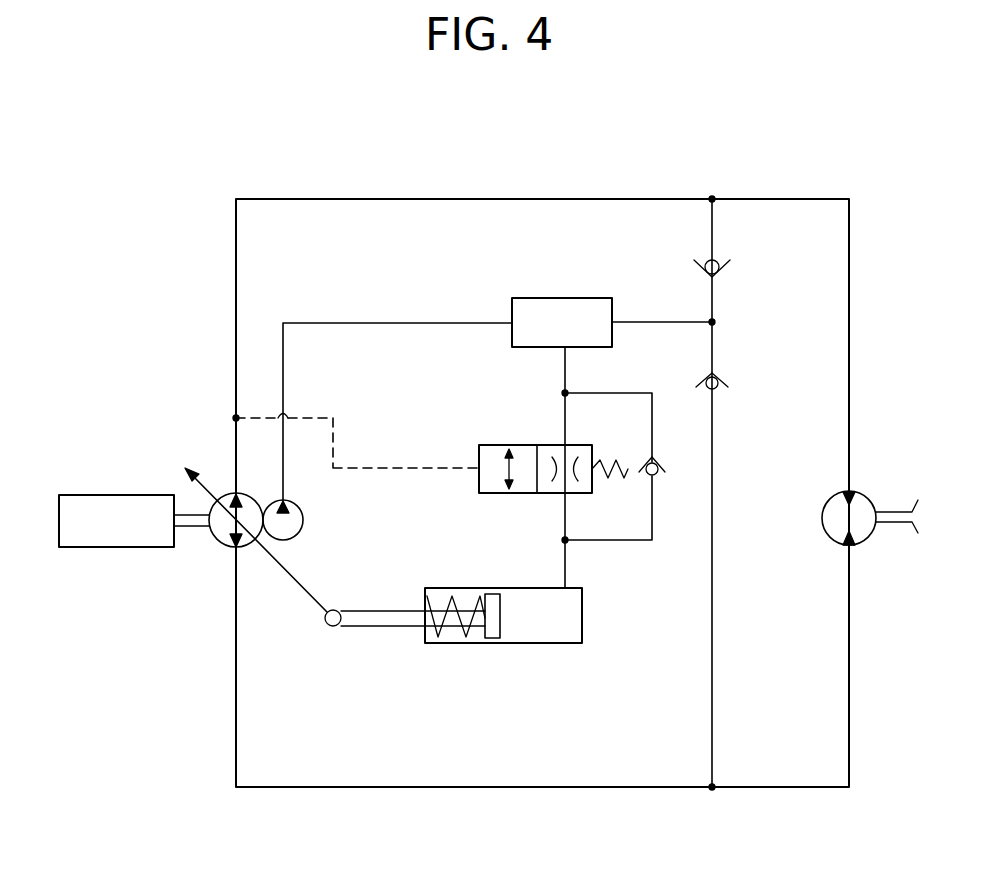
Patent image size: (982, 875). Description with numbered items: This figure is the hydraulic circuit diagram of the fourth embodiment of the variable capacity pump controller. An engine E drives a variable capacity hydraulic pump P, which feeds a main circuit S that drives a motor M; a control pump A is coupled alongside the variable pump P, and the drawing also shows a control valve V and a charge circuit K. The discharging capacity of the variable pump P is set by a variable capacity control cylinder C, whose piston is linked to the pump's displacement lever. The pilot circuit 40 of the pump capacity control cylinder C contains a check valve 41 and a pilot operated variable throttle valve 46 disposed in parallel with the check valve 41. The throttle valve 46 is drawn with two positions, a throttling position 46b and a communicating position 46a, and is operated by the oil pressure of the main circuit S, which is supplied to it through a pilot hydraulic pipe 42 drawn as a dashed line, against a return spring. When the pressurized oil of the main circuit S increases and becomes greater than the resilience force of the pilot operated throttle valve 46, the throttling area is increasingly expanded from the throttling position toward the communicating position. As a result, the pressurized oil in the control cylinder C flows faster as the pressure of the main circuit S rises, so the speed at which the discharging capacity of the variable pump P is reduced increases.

The main circuit S is at (338, 199).
The control valve V is at (573, 298).
The charge circuit K is at (718, 332).
The pilot circuit 40 is at (565, 376).
The pilot hydraulic pipe 42 is at (335, 418).
The pilot operated variable throttle valve 46 is at (518, 445).
The switching valve first position 46a is at (553, 494).
The switching valve second position 46b is at (500, 494).
The check valve 41 is at (661, 482).
The engine E is at (128, 495).
The variable capacity hydraulic pump P is at (213, 547).
The control pump A is at (303, 528).
The motor M is at (858, 495).
The variable capacity control cylinder C is at (530, 644).